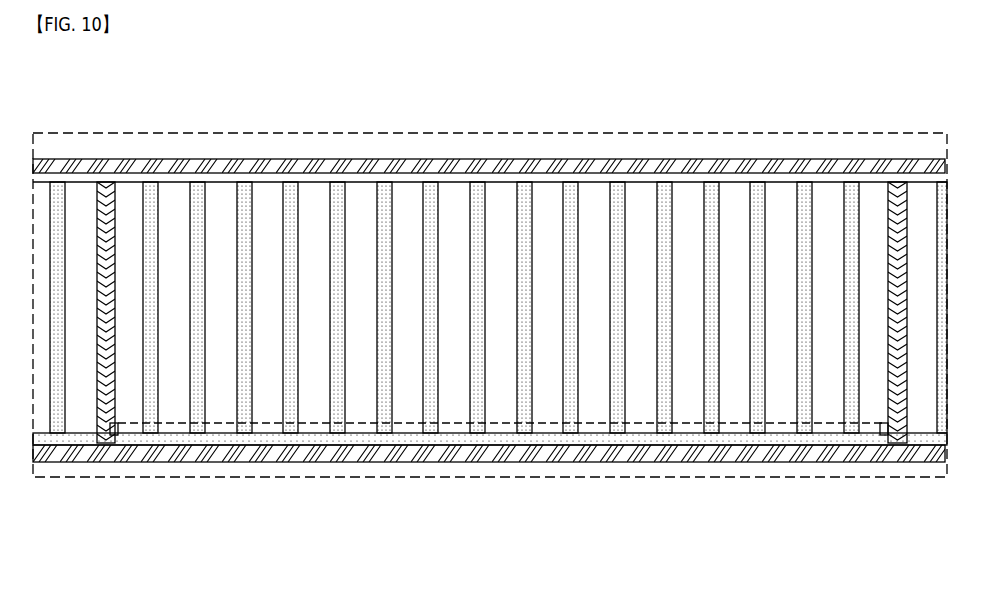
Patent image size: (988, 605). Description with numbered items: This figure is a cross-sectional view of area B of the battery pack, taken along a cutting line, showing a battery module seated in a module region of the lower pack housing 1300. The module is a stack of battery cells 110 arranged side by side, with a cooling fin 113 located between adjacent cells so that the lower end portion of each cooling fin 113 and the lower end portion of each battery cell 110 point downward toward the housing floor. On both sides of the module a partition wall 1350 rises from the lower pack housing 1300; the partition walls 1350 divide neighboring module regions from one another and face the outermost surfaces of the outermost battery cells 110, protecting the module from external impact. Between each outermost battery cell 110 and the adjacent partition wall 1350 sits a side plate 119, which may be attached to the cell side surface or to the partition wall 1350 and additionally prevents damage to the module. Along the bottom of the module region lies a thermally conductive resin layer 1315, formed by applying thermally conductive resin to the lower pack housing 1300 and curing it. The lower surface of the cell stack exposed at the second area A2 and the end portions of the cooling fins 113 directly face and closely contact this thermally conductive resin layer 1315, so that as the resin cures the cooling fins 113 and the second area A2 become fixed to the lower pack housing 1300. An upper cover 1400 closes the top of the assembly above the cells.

The battery cell 110 is at (173, 233).
The cooling fin 113 is at (200, 260).
The side plate 119 is at (112, 427).
The lower pack housing 1300 is at (610, 458).
The thermally conductive resin layer 1315 is at (702, 437).
The partition wall 1350 is at (106, 183).
The upper plate 1400 is at (518, 166).
The second area A2 is at (503, 425).
The area B is at (918, 478).